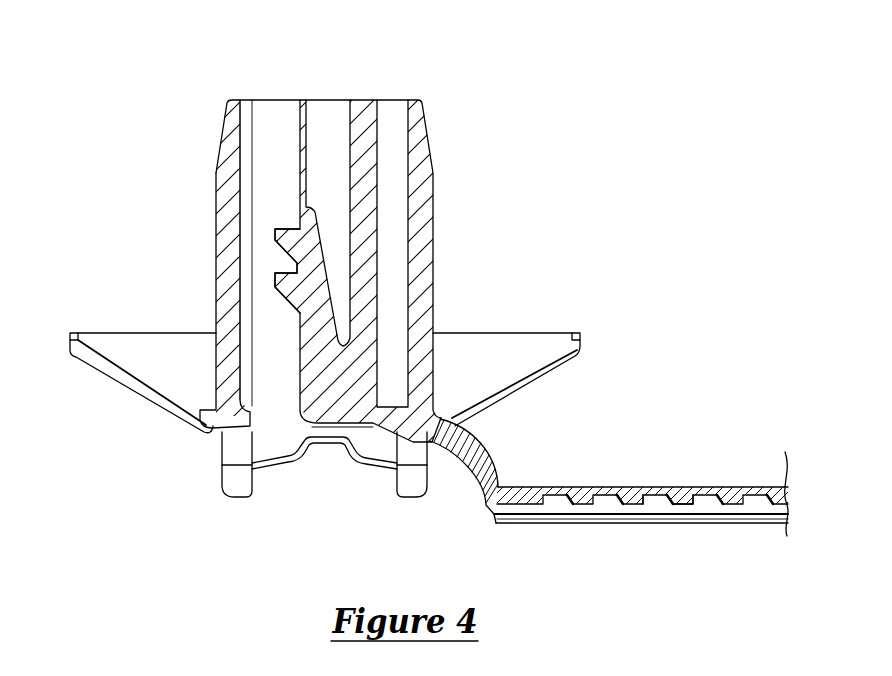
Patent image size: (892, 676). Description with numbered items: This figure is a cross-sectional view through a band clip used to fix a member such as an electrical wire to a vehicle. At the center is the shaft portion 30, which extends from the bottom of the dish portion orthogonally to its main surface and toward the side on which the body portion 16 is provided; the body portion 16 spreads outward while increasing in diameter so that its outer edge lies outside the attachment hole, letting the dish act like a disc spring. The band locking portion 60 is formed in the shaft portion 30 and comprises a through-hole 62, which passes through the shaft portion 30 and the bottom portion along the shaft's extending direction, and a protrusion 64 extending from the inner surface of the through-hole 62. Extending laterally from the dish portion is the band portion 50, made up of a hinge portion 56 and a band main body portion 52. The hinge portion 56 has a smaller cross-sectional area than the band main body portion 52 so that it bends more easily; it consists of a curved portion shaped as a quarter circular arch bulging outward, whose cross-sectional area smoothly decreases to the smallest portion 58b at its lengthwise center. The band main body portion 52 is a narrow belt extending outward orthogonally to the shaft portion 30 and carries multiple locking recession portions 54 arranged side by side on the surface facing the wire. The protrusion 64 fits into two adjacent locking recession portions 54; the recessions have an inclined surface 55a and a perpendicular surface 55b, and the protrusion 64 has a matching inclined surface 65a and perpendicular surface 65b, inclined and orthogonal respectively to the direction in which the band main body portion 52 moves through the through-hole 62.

The body portion 16 is at (108, 342).
The shaft portion 30 is at (218, 205).
The band portion 50 is at (640, 481).
The band main body portion 52 is at (651, 486).
The locking recession portions 54 is at (718, 513).
The inclined surface 55a is at (633, 515).
The perpendicular surface 55b is at (662, 515).
The hinge portion 56 is at (531, 471).
The smallest portion 58b is at (452, 437).
The band locking portion 60 is at (292, 206).
The through-hole 62 is at (272, 130).
The protrusion 64 is at (301, 157).
The inclined surface 65a is at (285, 303).
The perpendicular surface 65b is at (288, 268).